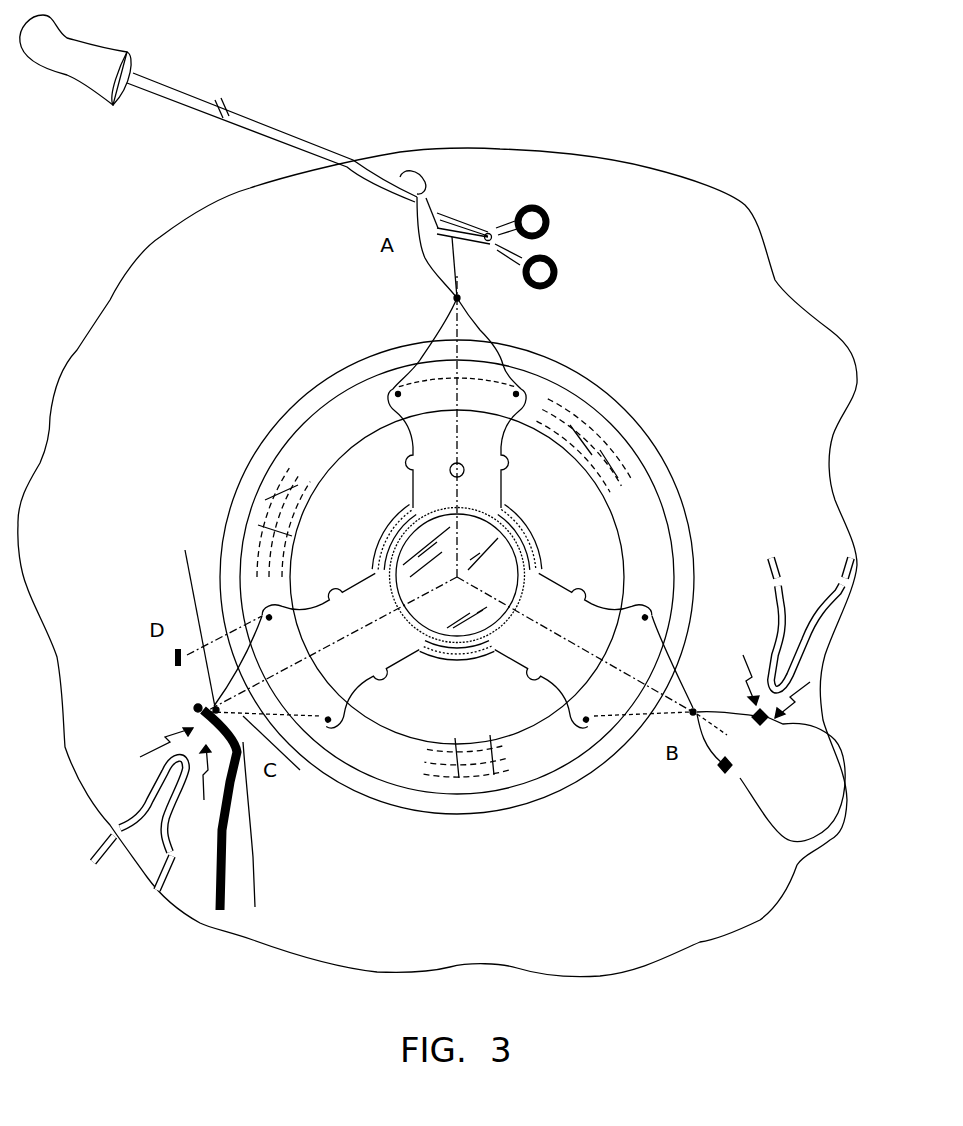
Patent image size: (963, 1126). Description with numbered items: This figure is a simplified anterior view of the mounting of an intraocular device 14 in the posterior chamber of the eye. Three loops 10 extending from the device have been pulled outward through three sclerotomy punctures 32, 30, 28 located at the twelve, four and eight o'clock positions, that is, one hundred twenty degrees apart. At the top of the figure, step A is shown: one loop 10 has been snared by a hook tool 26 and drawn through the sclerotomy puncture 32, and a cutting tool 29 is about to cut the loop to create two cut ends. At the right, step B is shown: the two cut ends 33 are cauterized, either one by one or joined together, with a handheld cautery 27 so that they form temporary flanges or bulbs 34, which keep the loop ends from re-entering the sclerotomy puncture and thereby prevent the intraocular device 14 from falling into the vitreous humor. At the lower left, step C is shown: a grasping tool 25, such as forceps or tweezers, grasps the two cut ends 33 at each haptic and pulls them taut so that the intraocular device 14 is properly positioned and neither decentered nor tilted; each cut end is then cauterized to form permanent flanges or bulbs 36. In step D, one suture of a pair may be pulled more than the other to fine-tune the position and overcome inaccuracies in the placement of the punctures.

The loop 10 is at (483, 333).
The intraocular device 14 is at (502, 553).
The grasping tool 25 is at (247, 860).
The hook tool 26 is at (275, 130).
The handheld cautery 27 is at (148, 803).
The sclerotomy puncture 28 is at (191, 612).
The cutting tool 29 is at (547, 215).
The sclerotomy puncture 30 is at (690, 715).
The sclerotomy puncture 32 is at (453, 298).
The cut ends 33 is at (300, 770).
The temporary flanges or bulbs 34 is at (762, 724).
The permanent flanges or bulbs 36 is at (206, 718).